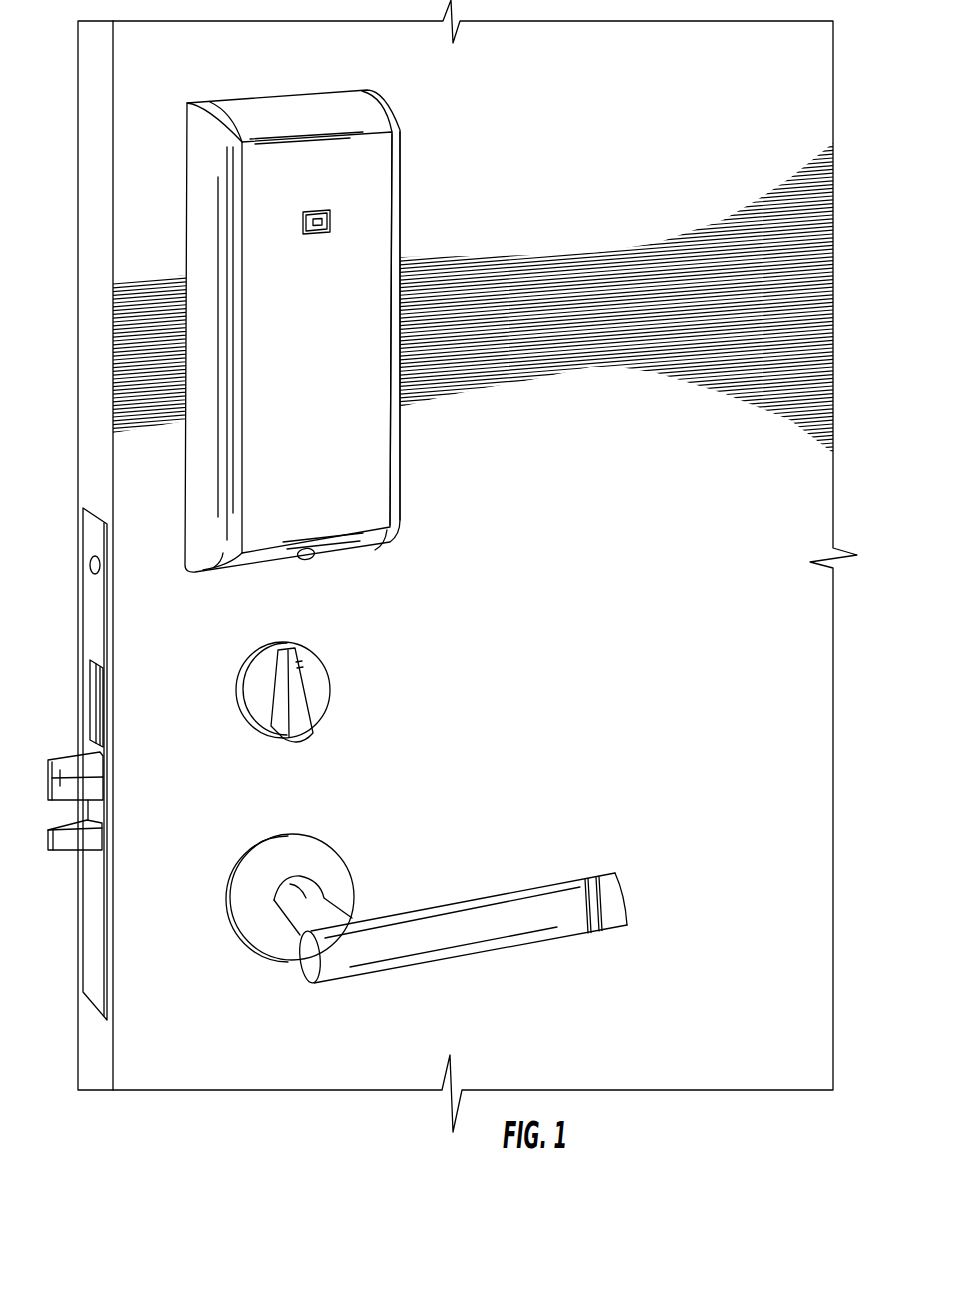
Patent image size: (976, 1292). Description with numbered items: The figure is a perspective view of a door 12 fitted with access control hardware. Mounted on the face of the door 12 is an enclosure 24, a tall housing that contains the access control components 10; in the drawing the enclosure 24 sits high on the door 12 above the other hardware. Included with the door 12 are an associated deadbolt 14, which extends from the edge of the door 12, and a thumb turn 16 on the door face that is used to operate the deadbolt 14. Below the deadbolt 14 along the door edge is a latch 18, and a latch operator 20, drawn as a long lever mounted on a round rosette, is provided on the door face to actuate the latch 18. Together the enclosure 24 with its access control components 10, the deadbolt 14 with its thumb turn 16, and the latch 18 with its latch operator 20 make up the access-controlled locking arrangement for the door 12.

The access control components 10 is at (410, 146).
The door 12 is at (638, 189).
The deadbolt 14 is at (100, 693).
The thumb turn 16 is at (299, 692).
The latch 18 is at (70, 767).
The latch operator 20 is at (490, 915).
The enclosure 24 is at (402, 230).